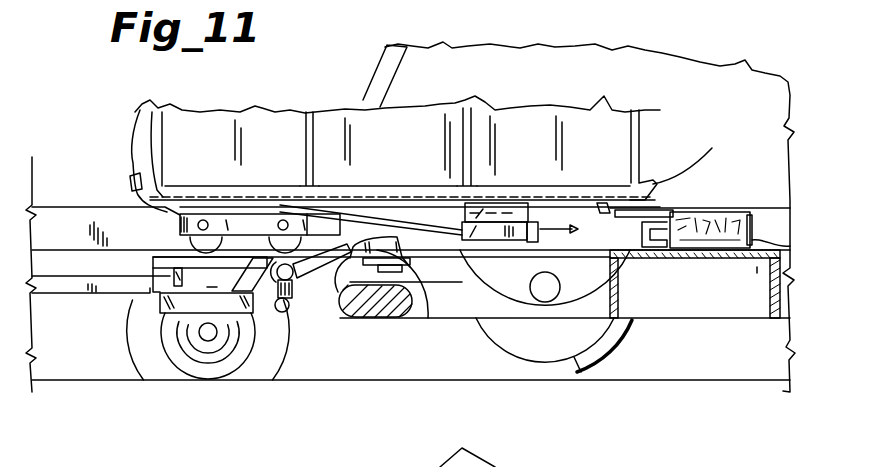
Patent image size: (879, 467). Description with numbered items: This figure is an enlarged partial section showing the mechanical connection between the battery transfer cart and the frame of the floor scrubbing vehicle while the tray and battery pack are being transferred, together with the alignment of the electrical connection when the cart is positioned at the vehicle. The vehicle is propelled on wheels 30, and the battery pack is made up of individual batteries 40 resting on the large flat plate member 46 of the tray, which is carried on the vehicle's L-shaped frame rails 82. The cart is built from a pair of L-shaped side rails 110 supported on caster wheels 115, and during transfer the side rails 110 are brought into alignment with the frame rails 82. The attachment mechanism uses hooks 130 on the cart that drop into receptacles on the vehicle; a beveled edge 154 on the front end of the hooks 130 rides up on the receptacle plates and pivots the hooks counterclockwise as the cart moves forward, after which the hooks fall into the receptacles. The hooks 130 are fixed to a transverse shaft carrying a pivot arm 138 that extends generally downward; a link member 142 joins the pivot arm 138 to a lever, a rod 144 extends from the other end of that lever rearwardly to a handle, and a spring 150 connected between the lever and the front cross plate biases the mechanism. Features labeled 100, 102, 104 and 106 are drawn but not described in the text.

The wheels 30 is at (587, 378).
The batteries 40 is at (268, 135).
The plate member 46 is at (708, 158).
The rails 82 is at (657, 262).
The ground engaging assembly 100 is at (460, 466).
The link member 102 is at (376, 466).
The link member 104 is at (545, 443).
The link member 106 is at (709, 463).
The side rails 110 is at (147, 380).
The caster wheels 115 is at (188, 377).
The hooks 130 is at (350, 318).
The pivot arm 138 is at (280, 381).
The link member 142 is at (262, 376).
The rod 144 is at (70, 285).
The spring 150 is at (185, 240).
The beveled edge 154 is at (428, 318).